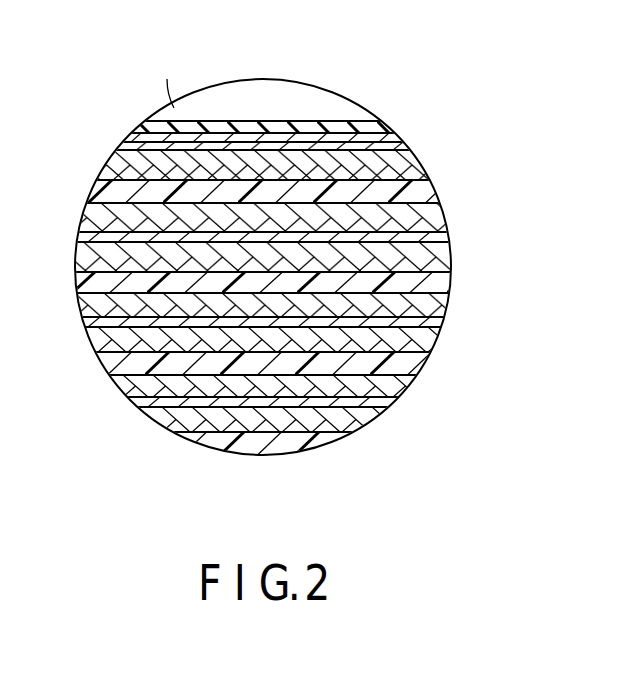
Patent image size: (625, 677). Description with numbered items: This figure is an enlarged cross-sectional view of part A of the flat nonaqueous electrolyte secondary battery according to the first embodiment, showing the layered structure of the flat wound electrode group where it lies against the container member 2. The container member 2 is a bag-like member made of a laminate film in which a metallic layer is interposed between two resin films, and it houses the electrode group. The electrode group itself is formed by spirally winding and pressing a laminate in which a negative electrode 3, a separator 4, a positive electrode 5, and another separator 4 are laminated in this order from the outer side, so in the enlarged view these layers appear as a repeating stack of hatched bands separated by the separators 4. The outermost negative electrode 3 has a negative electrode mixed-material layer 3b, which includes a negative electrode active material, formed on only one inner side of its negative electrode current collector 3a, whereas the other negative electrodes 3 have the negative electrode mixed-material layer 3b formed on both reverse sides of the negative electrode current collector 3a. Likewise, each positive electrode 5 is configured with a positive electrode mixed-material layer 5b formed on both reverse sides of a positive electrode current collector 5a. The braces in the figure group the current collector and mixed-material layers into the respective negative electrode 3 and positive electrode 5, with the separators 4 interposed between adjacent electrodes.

The part A is at (163, 80).
The container member 2 is at (383, 119).
The negative electrode 3 is at (316, 247).
The negative electrode current collector 3a is at (418, 142).
The negative electrode mixed-material layer 3b is at (413, 167).
The separator 4 is at (105, 188).
The positive electrode 5 is at (316, 335).
The positive electrode current collector 5a is at (430, 237).
The positive electrode mixed-material layer 5b is at (428, 213).